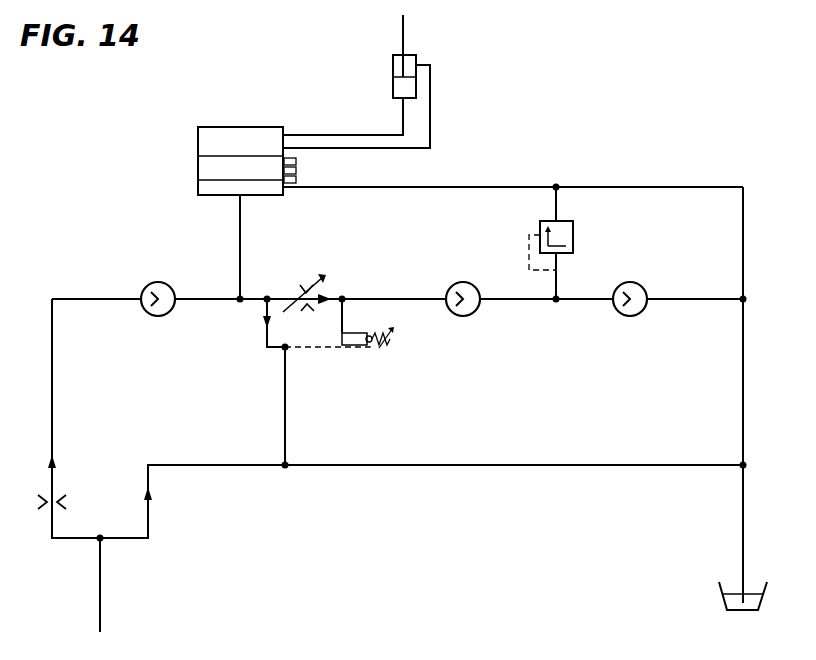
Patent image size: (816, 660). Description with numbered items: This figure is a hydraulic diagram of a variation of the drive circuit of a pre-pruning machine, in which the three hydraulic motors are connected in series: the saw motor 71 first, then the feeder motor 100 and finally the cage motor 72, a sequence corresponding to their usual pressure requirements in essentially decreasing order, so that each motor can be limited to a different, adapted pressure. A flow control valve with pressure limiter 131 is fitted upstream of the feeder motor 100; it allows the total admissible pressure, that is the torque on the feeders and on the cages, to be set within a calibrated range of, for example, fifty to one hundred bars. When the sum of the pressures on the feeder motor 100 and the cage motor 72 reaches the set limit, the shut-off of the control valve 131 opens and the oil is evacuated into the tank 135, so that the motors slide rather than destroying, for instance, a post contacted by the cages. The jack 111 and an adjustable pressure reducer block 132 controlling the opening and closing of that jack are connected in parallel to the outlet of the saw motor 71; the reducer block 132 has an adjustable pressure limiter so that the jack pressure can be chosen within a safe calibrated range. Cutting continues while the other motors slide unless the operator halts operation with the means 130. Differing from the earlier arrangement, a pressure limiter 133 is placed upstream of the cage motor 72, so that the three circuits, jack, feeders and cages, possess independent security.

The saw motor 71 is at (162, 282).
The cage motor 72 is at (632, 283).
The feeder motor 100 is at (466, 283).
The jack 111 is at (410, 55).
The means for halting operation 130 is at (86, 489).
The flow control valve with pressure limiter 131 is at (312, 335).
The adjustable pressure reducer block 132 is at (235, 127).
The pressure limiter 133 is at (568, 221).
The tank 135 is at (730, 585).